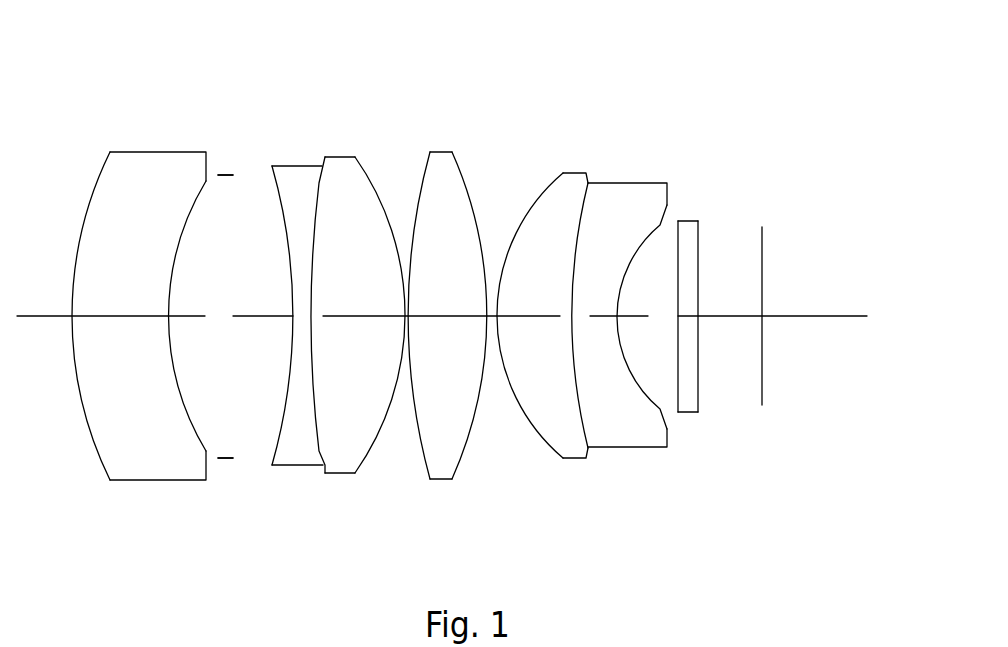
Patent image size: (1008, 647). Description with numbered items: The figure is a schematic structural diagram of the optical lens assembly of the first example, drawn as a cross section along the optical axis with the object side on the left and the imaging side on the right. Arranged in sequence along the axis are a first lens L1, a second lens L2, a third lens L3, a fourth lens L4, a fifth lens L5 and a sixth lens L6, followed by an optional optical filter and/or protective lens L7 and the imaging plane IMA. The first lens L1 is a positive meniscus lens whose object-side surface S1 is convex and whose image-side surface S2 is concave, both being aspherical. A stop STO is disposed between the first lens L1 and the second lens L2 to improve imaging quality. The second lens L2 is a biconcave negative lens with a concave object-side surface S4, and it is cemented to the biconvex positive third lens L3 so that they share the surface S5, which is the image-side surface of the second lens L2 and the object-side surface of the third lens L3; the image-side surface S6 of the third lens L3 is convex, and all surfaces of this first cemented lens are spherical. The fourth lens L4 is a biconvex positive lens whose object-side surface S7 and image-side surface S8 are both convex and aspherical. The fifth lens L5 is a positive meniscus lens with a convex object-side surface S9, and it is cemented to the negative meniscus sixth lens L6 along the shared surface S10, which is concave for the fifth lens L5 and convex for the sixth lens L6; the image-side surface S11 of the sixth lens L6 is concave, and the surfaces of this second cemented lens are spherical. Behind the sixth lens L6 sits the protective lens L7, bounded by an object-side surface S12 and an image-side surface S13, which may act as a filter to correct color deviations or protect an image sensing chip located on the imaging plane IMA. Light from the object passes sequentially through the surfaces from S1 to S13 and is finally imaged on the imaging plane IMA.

The object-side surface of first lens S1 is at (100, 177).
The image-side surface of first lens S2 is at (205, 182).
The stop STO is at (207, 181).
The object-side surface of second lens S4 is at (223, 175).
The image-side surface of second lens / object-side surface of third lens S5 is at (317, 167).
The image-side surface of third lens S6 is at (378, 200).
The object-side surface of fourth lens S7 is at (421, 183).
The image-side surface of fourth lens S8 is at (466, 185).
The object-side surface of fifth lens S9 is at (552, 180).
The image-side surface of fifth lens / object-side surface of sixth lens S10 is at (588, 182).
The image-side surface of sixth lens S11 is at (678, 221).
The object-side surface of protective lens S12 is at (698, 222).
The image-side surface of protective lens S13 is at (762, 230).
The first lens L1 is at (115, 298).
The second lens L2 is at (270, 298).
The third lens L3 is at (341, 298).
The fourth lens L4 is at (473, 298).
The fifth lens L5 is at (588, 298).
The sixth lens L6 is at (663, 298).
The protective lens L7 is at (769, 298).
The imaging plane IMA is at (762, 377).